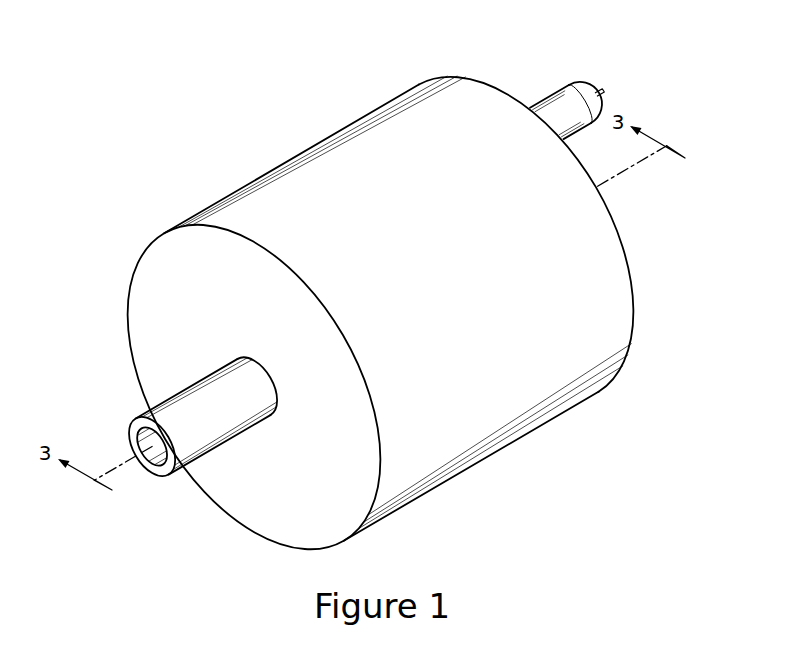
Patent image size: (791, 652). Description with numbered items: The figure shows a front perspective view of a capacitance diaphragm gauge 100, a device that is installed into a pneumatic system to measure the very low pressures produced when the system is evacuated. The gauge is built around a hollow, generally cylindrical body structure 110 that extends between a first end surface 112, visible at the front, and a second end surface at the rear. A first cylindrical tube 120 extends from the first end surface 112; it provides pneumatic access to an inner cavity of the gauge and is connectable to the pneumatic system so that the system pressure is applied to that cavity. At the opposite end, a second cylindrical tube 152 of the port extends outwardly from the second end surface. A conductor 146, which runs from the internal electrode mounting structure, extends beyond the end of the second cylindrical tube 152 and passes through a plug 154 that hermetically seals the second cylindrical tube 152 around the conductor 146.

The capacitance diaphragm gauge 100 is at (401, 306).
The cylindrical body structure 110 is at (327, 175).
The first end surface 112 is at (160, 292).
The first cylindrical tube 120 is at (153, 411).
The second cylindrical tube 152 is at (597, 79).
The conductor 146 is at (598, 90).
The plug 154 is at (592, 108).